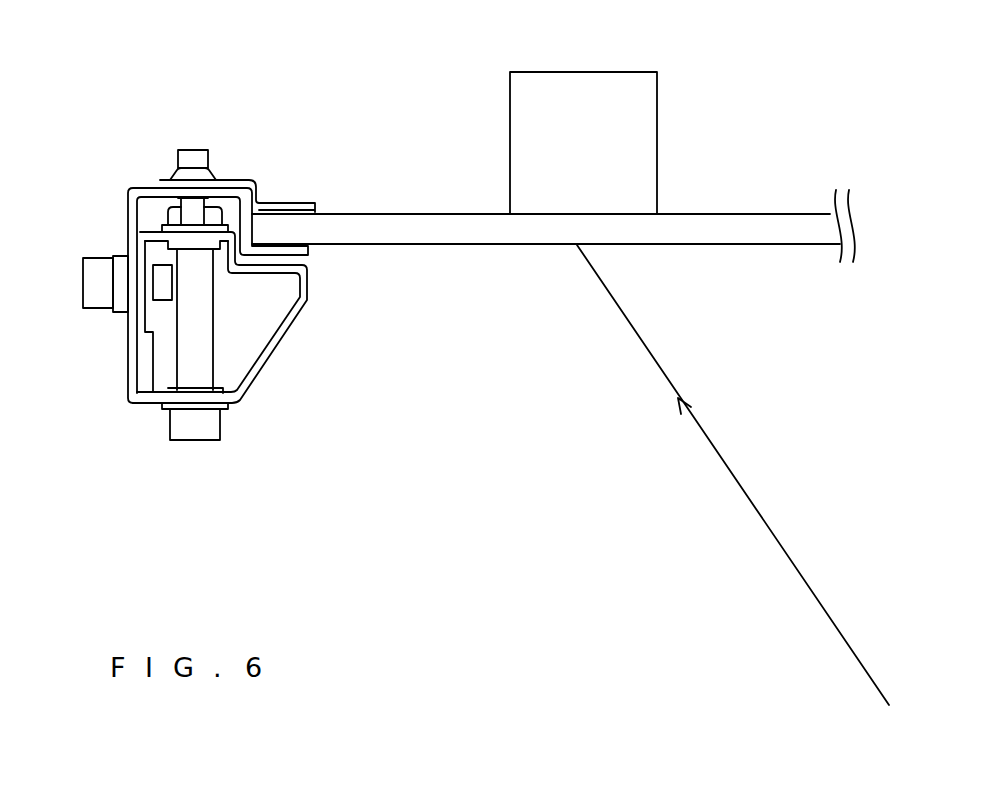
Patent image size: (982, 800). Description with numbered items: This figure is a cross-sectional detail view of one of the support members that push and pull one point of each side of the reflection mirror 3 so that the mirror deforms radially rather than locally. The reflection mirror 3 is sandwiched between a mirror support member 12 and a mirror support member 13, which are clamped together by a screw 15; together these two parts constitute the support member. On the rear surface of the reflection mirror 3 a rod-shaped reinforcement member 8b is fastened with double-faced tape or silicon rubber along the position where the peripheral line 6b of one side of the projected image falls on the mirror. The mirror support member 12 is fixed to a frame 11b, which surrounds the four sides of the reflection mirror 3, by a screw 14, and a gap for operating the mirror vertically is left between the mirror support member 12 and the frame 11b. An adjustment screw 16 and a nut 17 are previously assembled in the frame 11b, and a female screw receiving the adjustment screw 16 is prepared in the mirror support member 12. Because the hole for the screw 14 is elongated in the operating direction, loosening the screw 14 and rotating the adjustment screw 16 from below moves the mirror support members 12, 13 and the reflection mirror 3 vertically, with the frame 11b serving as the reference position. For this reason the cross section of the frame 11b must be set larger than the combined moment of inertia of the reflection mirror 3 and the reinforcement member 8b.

The reflection mirror 3 is at (728, 214).
The reinforcement member 8b is at (582, 72).
The peripheral line 6b is at (740, 488).
The mirror support member 12 is at (125, 220).
The mirror support member 13 is at (285, 203).
The frame 11b is at (277, 348).
The screw 15 is at (197, 162).
The nut 17 is at (170, 216).
The screw 14 is at (83, 292).
The adjustment screw 16 is at (193, 441).